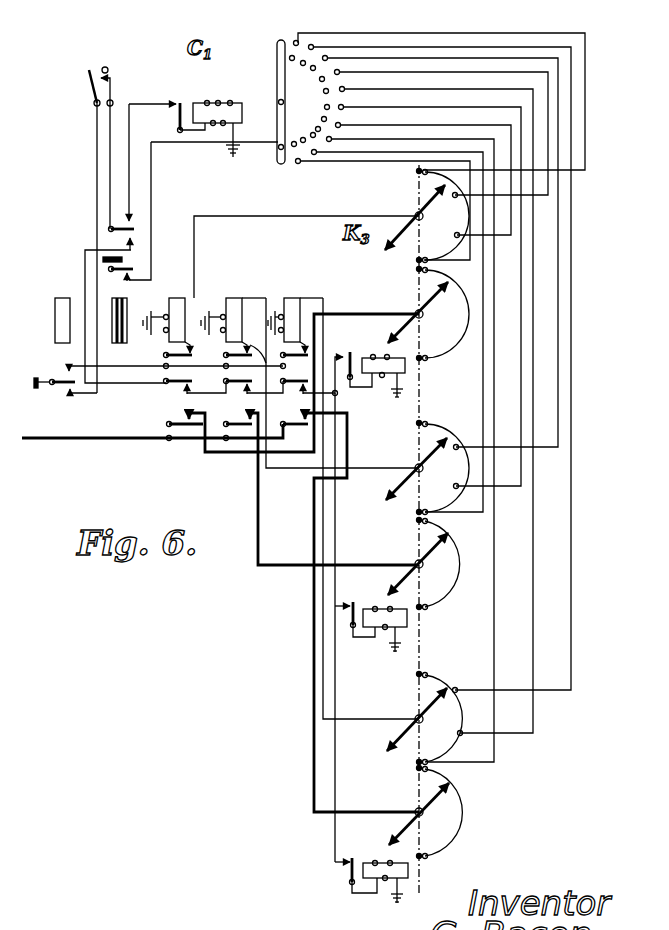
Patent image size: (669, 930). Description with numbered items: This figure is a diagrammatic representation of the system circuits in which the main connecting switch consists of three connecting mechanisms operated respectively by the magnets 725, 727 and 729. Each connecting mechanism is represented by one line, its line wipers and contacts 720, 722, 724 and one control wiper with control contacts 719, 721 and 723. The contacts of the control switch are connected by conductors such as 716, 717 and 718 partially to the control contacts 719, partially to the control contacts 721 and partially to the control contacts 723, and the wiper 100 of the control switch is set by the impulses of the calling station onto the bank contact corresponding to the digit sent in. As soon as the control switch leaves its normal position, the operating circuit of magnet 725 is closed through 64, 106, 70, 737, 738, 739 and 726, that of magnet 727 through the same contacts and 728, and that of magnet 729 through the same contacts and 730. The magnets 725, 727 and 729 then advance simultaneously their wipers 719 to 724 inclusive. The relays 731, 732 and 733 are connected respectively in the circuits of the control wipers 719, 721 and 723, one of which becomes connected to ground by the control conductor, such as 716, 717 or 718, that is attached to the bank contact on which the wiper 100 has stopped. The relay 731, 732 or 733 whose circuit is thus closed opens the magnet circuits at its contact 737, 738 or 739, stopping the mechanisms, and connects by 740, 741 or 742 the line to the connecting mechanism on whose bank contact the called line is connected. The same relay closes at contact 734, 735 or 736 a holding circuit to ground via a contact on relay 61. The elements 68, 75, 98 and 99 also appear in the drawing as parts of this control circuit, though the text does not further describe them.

The relay 61 is at (58, 302).
The contact 64 is at (70, 387).
The resistor 68 is at (125, 340).
The contact 70 is at (133, 242).
The contact 75 is at (118, 273).
The relay coil 98 is at (217, 120).
The relay contact 99 is at (167, 109).
The wiper of the control switch 100 is at (311, 102).
The contact 106 is at (116, 83).
The control conductor 716 is at (324, 163).
The control conductor 717 is at (352, 153).
The control conductor 718 is at (385, 140).
The control wiper and control contacts 719 is at (426, 216).
The line wipers and contacts 720 is at (428, 314).
The control wiper and control contacts 721 is at (427, 468).
The line wipers and contacts 722 is at (423, 564).
The control wiper and control contacts 723 is at (425, 718).
The line wipers and contacts 724 is at (425, 812).
The magnet 725 is at (377, 383).
The contact 726 is at (352, 358).
The magnet 727 is at (380, 635).
The contact 728 is at (354, 604).
The magnet 729 is at (380, 891).
The contact 730 is at (335, 871).
The relay 731 is at (169, 315).
The relay 732 is at (233, 313).
The relay 733 is at (295, 313).
The holding contact 734 is at (192, 359).
The holding contact 735 is at (241, 366).
The holding contact 736 is at (302, 352).
The relay contact 737 is at (172, 392).
The relay contact 738 is at (238, 393).
The relay contact 739 is at (296, 375).
The line contact 740 is at (180, 424).
The line contact 741 is at (236, 424).
The line contact 742 is at (293, 417).